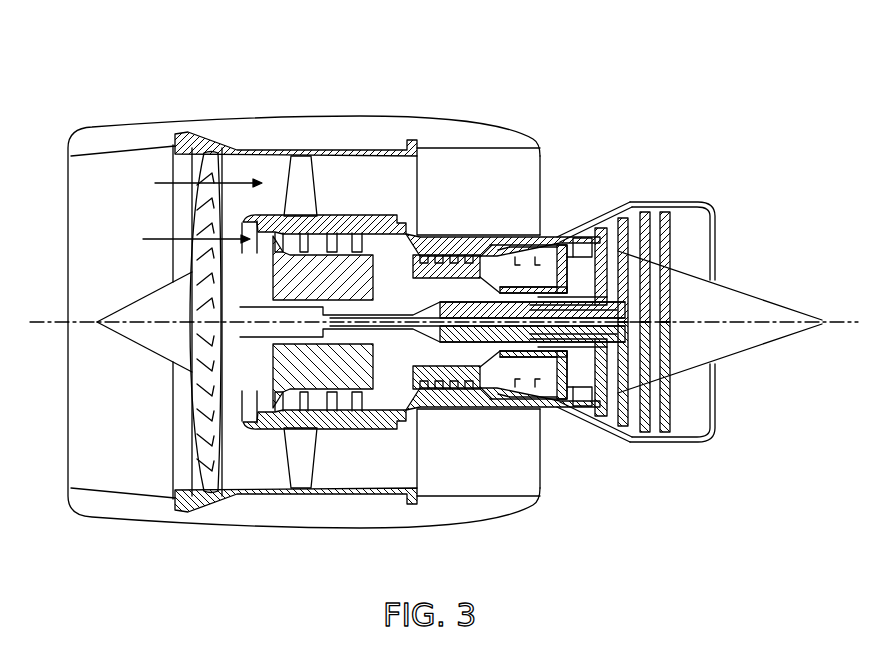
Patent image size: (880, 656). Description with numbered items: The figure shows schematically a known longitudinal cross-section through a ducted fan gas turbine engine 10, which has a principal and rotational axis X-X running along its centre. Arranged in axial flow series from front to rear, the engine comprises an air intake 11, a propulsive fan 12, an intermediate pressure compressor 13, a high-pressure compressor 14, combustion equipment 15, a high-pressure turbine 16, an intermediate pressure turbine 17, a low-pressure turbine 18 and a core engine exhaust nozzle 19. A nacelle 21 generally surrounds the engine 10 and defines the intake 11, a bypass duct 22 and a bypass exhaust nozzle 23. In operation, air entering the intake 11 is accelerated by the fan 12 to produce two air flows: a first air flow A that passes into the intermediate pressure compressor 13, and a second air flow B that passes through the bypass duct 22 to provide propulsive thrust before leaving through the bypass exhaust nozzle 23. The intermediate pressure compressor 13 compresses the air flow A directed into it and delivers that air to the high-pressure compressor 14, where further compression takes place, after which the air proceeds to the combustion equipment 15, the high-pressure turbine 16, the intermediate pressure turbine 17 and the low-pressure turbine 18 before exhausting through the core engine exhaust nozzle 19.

The ducted fan gas turbine engine 10 is at (117, 88).
The air intake 11 is at (118, 149).
The propulsive fan 12 is at (197, 450).
The intermediate pressure compressor 13 is at (342, 420).
The high-pressure compressor 14 is at (441, 253).
The combustion equipment 15 is at (492, 402).
The high-pressure turbine 16 is at (560, 410).
The intermediate pressure turbine 17 is at (597, 232).
The low-pressure turbine 18 is at (611, 432).
The core engine exhaust nozzle 19 is at (706, 203).
The nacelle 21 is at (308, 117).
The bypass duct 22 is at (498, 190).
The bypass exhaust nozzle 23 is at (540, 150).